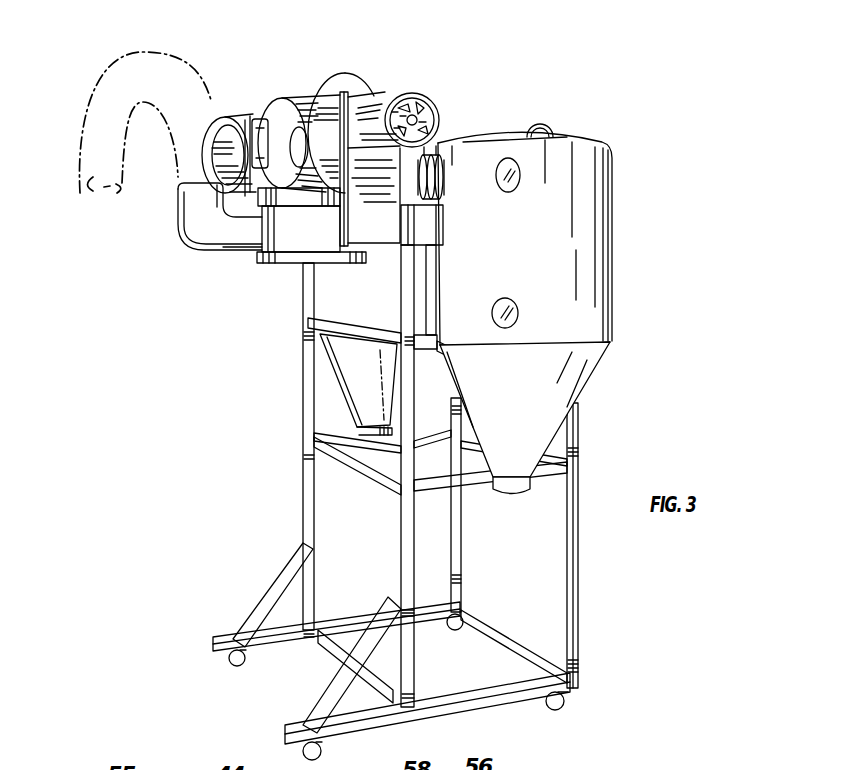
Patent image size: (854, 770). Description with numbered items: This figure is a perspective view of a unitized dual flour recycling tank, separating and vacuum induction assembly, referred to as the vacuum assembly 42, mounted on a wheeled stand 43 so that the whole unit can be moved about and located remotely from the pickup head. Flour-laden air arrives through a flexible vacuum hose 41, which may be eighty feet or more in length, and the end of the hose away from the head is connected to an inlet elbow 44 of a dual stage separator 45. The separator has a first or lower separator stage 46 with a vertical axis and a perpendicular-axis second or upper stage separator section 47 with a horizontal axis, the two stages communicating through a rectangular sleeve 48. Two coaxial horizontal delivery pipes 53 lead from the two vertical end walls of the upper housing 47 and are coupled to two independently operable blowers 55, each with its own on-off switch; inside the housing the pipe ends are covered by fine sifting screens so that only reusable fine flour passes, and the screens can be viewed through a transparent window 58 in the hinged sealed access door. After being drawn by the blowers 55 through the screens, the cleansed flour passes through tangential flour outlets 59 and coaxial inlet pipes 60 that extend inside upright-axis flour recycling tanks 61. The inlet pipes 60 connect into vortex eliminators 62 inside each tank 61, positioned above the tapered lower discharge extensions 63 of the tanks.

The flexible vacuum hose 41 is at (77, 191).
The vacuum assembly 42 is at (618, 200).
The wheeled stand 43 is at (581, 497).
The inlet elbow 44 is at (200, 222).
The dual stage separator 45 is at (282, 268).
The first separator stage 46 is at (257, 249).
The second stage separator section 47 is at (292, 98).
The rectangular sleeve 48 is at (321, 203).
The horizontal delivery pipes 53 is at (304, 130).
The blowers 55 is at (241, 118).
The transparent window 58 is at (250, 143).
The tangential flour outlets 59 is at (403, 188).
The coaxial inlet pipes 60 is at (434, 182).
The flour recycling tanks 61 is at (600, 272).
The vortex eliminators 62 is at (519, 132).
The tapered lower discharge extensions 63 is at (348, 380).